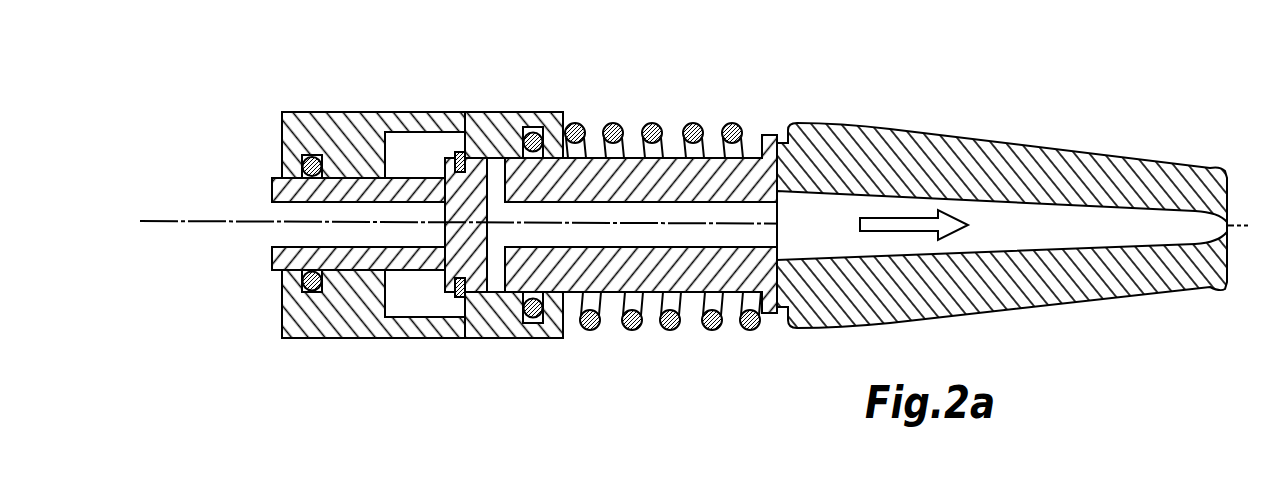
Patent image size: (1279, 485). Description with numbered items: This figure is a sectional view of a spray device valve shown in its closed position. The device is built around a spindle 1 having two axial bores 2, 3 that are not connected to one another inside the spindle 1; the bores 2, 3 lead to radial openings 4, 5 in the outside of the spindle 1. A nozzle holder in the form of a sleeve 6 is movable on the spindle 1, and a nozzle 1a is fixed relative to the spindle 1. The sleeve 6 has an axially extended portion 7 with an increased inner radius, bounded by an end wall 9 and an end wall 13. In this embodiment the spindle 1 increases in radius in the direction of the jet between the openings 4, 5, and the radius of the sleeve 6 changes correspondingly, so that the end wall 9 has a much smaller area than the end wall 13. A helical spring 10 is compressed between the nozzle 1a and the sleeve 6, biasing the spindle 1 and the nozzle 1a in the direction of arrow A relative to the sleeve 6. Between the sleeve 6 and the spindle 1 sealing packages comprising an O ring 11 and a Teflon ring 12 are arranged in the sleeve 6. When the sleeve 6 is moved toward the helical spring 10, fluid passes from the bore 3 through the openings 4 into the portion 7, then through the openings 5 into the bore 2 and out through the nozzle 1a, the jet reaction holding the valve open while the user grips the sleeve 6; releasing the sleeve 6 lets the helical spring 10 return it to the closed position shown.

The spindle 1 is at (773, 175).
The nozzle 1a is at (1050, 300).
The bore 2 is at (765, 213).
The bore 3 is at (282, 212).
The openings 4 is at (433, 195).
The openings 5 is at (493, 125).
The sleeve 6 is at (533, 124).
The axially extended portion with increased inner radius 7 is at (413, 152).
The end wall 9 is at (453, 124).
The helical spring 10 is at (733, 122).
The O ring 11 is at (313, 293).
The Teflon ring 12 is at (300, 273).
The end wall 13 is at (390, 133).
The arrow A is at (924, 222).